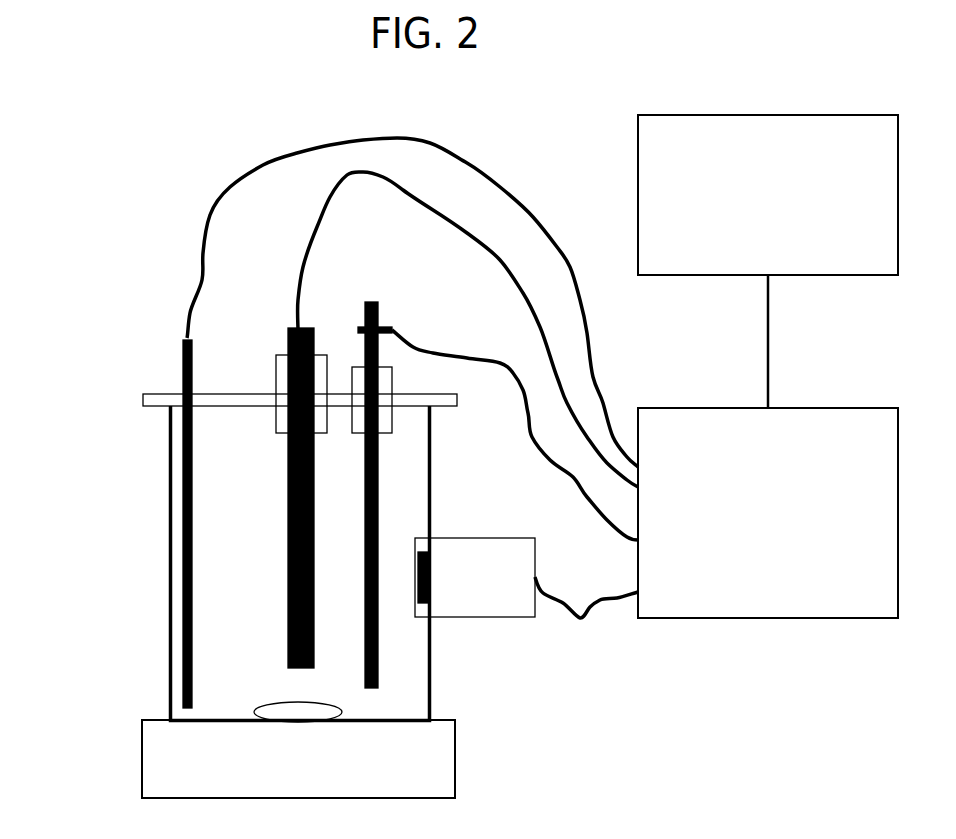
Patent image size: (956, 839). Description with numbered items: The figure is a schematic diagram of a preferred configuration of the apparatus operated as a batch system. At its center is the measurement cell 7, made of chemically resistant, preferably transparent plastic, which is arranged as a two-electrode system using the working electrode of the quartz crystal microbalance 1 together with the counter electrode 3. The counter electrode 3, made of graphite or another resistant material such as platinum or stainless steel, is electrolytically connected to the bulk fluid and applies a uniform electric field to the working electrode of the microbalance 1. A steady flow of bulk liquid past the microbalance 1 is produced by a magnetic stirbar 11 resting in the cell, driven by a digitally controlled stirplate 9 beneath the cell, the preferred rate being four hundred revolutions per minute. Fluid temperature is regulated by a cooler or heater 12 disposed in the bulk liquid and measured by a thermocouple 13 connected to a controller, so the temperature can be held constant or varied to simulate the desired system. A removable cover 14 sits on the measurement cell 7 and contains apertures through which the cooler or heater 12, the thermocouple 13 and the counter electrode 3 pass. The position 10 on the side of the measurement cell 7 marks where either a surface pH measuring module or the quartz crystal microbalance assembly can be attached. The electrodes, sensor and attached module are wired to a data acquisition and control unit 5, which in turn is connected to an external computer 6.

The quartz crystal microbalance 1 is at (428, 612).
The counter electrode 3 is at (378, 307).
The data acquisition and control unit 5 is at (820, 408).
The external computer 6 is at (638, 192).
The measurement cell 7 is at (168, 562).
The digitally controlled stirplate 9 is at (142, 770).
The position in the measurement cell 10 is at (458, 538).
The magnetic stirbar 11 is at (273, 702).
The cooler or heater 12 is at (288, 340).
The thermocouple 13 is at (185, 347).
The removable cover 14 is at (172, 393).